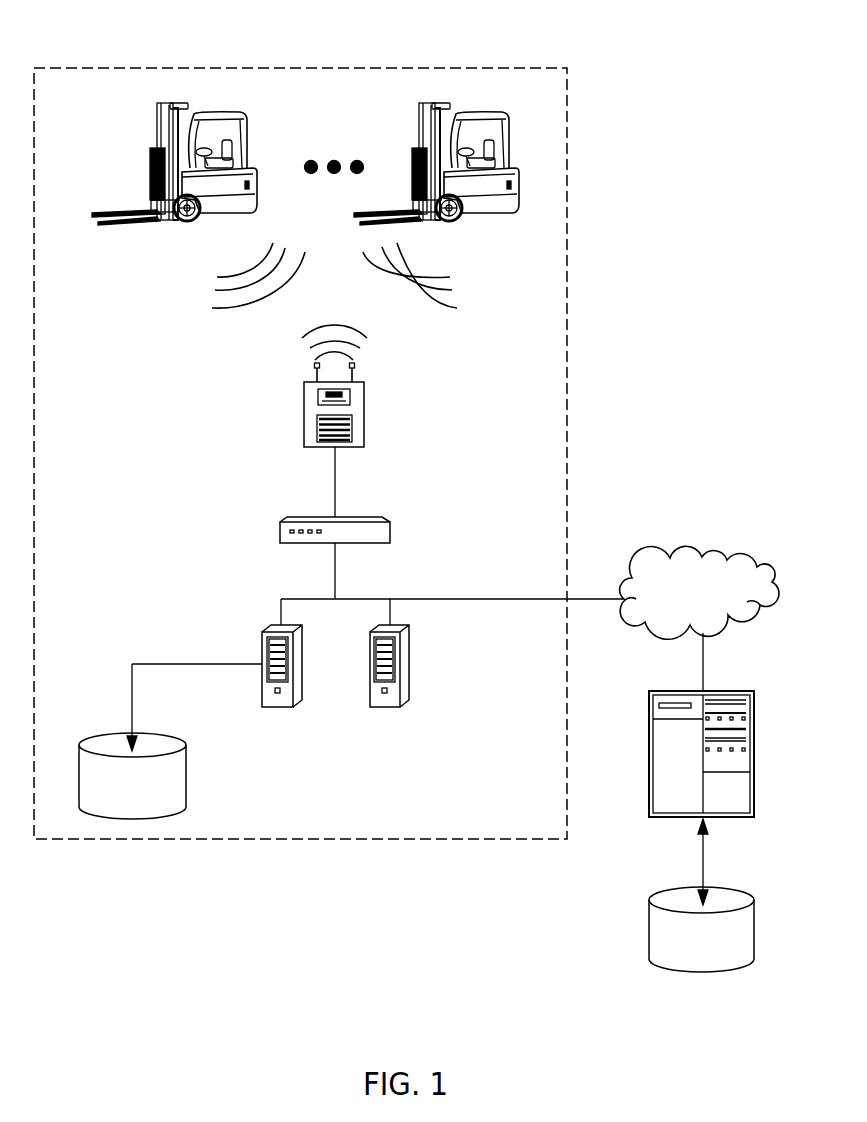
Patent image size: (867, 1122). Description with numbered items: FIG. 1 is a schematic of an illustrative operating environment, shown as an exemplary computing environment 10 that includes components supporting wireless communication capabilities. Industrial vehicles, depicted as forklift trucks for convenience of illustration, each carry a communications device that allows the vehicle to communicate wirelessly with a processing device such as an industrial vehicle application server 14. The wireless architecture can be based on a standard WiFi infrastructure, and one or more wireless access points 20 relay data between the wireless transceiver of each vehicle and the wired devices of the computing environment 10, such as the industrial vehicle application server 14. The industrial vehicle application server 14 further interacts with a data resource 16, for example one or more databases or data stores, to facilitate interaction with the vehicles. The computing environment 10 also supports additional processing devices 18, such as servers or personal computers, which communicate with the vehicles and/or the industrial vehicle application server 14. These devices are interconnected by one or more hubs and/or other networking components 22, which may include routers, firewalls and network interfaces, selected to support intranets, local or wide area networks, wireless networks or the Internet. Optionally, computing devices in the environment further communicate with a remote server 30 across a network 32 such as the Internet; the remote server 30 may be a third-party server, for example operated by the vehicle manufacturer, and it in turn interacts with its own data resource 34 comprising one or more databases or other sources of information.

The computing environment 10 is at (78, 66).
The industrial vehicle application server 14 is at (263, 648).
The data resource 16 is at (93, 736).
The processing device 18 is at (408, 646).
The wireless access point 20 is at (307, 402).
The networking component 22 is at (281, 527).
The remote server 30 is at (649, 763).
The network 32 is at (674, 559).
The data resource 34 is at (649, 930).